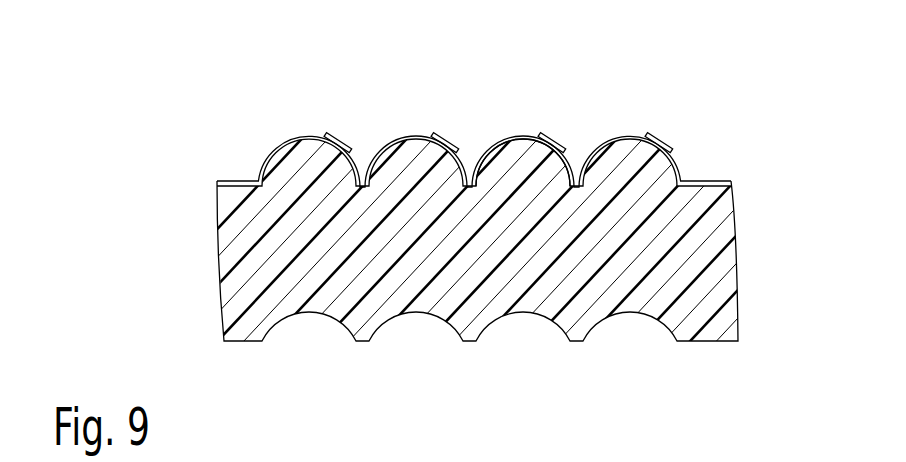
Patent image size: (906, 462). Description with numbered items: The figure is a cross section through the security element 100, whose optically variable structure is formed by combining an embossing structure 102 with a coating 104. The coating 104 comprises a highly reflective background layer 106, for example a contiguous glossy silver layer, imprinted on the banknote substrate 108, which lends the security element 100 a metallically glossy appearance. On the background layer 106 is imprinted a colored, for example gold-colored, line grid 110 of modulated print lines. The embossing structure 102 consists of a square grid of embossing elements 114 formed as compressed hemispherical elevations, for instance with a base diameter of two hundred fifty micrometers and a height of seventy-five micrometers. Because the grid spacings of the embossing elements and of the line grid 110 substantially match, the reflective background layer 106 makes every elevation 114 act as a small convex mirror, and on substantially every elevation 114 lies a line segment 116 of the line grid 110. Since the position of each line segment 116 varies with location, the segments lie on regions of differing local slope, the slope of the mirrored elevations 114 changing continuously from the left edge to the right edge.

The security element 100 is at (114, 136).
The embossing structure 102 is at (712, 155).
The coating 104 is at (205, 72).
The background layer 106 is at (273, 149).
The banknote substrate 108 is at (228, 238).
The line grid 110 is at (540, 138).
The embossing elements 114 is at (510, 167).
The line segment 116 is at (330, 138).